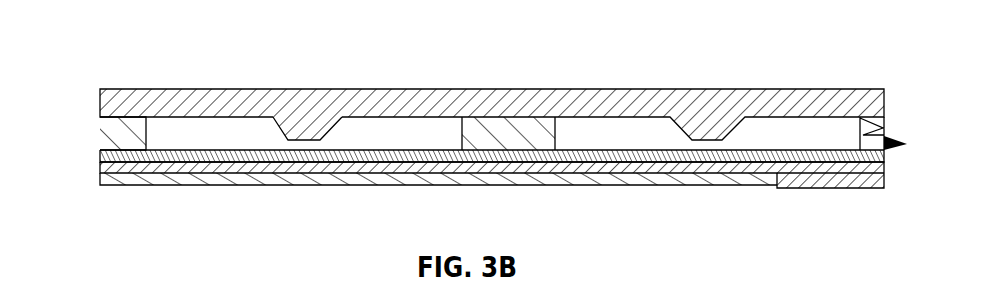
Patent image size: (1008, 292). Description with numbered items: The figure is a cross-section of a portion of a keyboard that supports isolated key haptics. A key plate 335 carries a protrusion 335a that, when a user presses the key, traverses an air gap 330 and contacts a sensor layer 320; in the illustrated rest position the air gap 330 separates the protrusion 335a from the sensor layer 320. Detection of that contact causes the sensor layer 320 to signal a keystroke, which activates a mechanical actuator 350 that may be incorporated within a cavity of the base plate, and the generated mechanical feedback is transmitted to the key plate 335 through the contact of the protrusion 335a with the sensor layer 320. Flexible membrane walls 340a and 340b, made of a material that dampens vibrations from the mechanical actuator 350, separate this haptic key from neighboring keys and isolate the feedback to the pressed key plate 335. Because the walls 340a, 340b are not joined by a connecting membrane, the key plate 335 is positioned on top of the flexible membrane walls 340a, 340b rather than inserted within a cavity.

The sensor layer 320 is at (103, 155).
The air gap 330 is at (306, 153).
The key plate 335 is at (310, 107).
The protrusion 335a is at (292, 119).
The flexible membrane wall 340a is at (120, 138).
The flexible membrane wall 340b is at (495, 133).
The mechanical actuator 350 is at (721, 176).